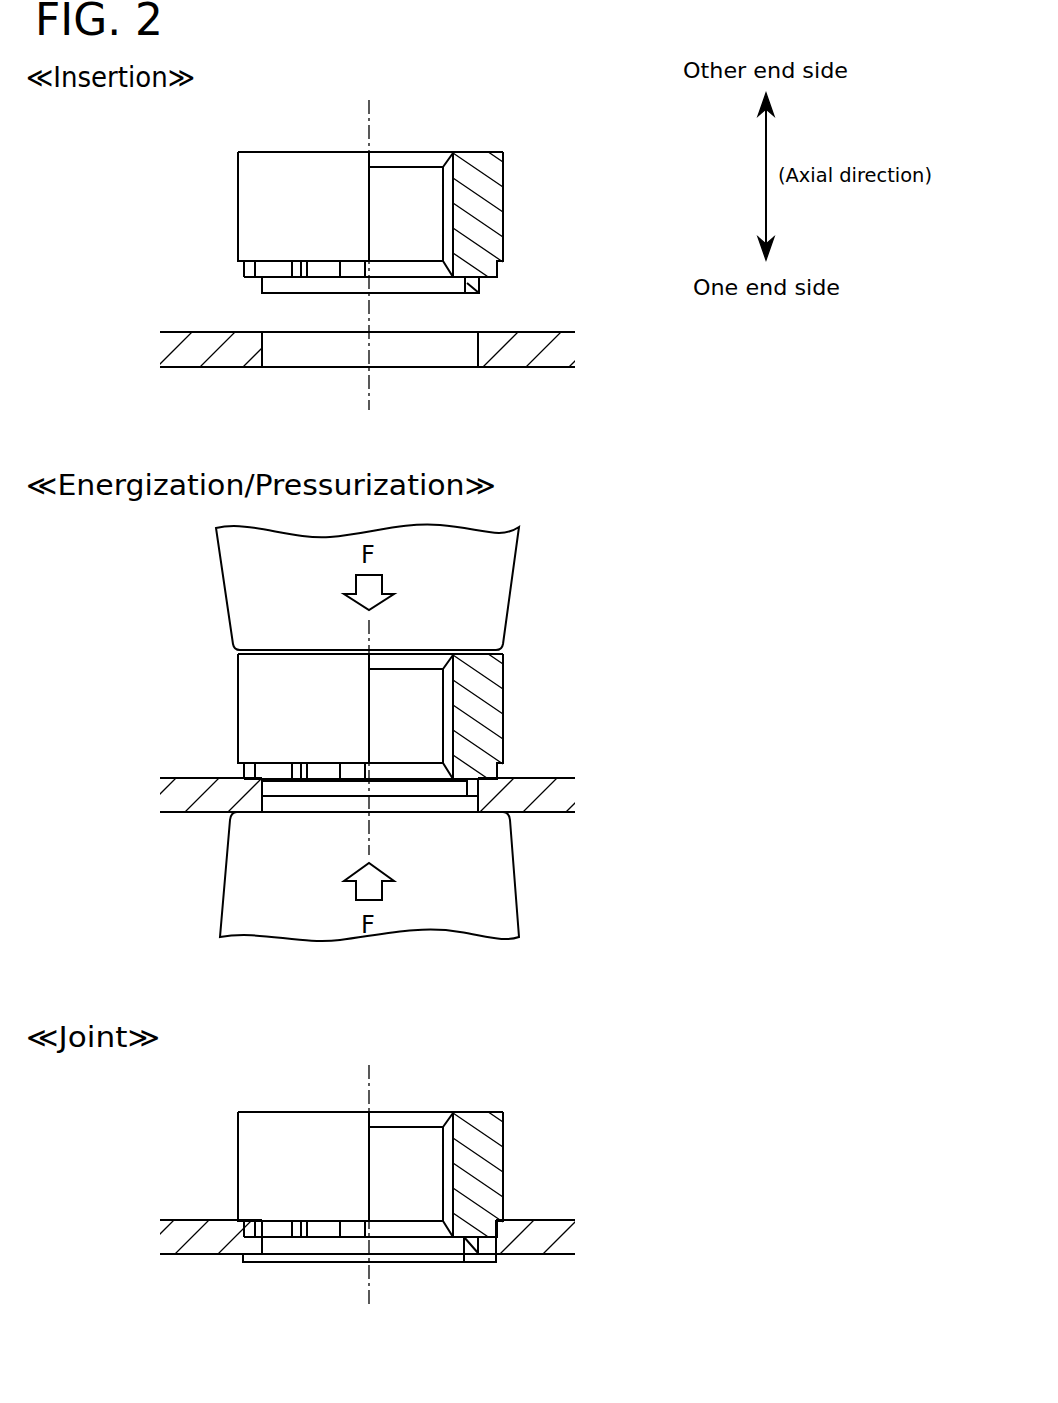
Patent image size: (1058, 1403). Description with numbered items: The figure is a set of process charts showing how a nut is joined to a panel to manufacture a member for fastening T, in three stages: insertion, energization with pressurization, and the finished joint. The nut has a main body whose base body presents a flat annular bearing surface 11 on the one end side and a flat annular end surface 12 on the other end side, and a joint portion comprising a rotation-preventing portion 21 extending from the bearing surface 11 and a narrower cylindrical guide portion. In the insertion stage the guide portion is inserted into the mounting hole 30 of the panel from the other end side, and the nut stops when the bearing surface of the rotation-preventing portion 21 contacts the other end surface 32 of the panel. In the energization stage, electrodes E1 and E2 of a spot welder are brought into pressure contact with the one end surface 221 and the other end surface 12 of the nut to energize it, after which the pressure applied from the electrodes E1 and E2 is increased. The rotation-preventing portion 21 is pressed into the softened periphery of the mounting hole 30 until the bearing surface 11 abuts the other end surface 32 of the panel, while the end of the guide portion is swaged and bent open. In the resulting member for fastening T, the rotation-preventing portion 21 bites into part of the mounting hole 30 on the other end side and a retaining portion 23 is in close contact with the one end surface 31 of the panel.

The one end surface 221 is at (477, 814).
The retaining portion 23 is at (492, 1258).
The rotation-preventing portion 21 is at (498, 1237).
The mounting hole 30 is at (435, 350).
The other end surface 32 is at (556, 777).
The one end surface 31 is at (557, 814).
The end surface 12 is at (504, 651).
The bearing surface 11 is at (505, 773).
The electrode E1 is at (245, 880).
The electrode E2 is at (245, 588).
The member for fastening T is at (220, 1276).